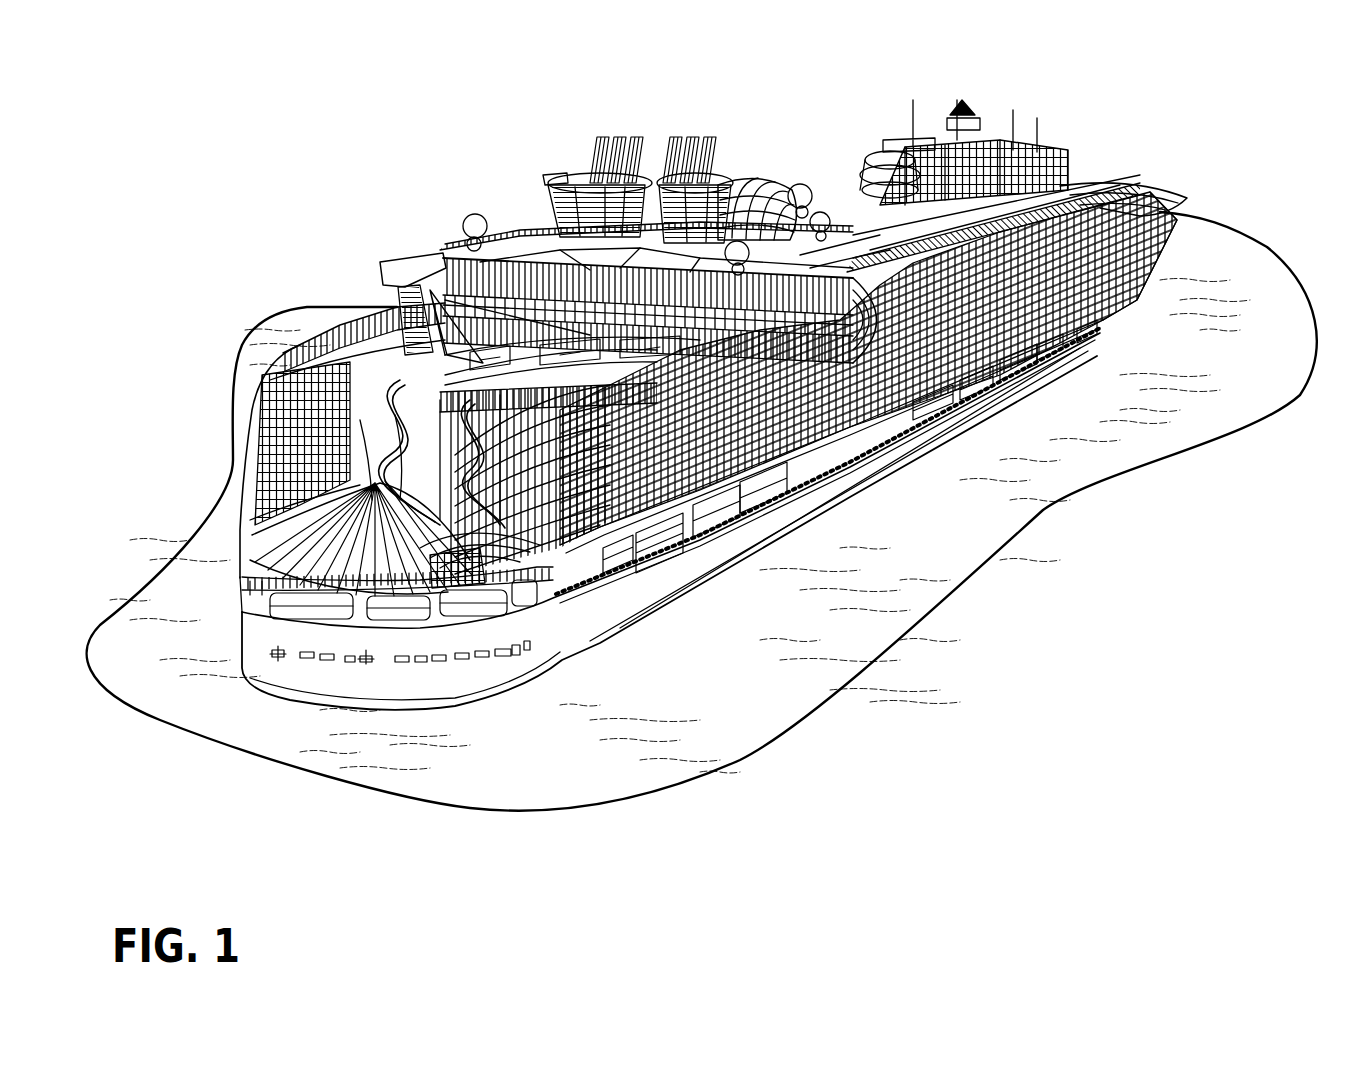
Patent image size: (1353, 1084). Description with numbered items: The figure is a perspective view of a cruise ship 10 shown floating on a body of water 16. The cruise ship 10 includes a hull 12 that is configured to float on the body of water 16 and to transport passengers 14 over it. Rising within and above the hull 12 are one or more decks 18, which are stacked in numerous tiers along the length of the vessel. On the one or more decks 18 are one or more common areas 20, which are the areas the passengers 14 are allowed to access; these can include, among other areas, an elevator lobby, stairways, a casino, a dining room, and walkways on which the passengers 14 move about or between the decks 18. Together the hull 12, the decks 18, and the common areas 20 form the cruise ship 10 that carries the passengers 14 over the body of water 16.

The cruise ship 10 is at (240, 617).
The hull 12 is at (975, 428).
The passengers 14 is at (937, 150).
The body of water 16 is at (827, 654).
The decks 18 is at (1137, 317).
The common areas 20 is at (580, 332).